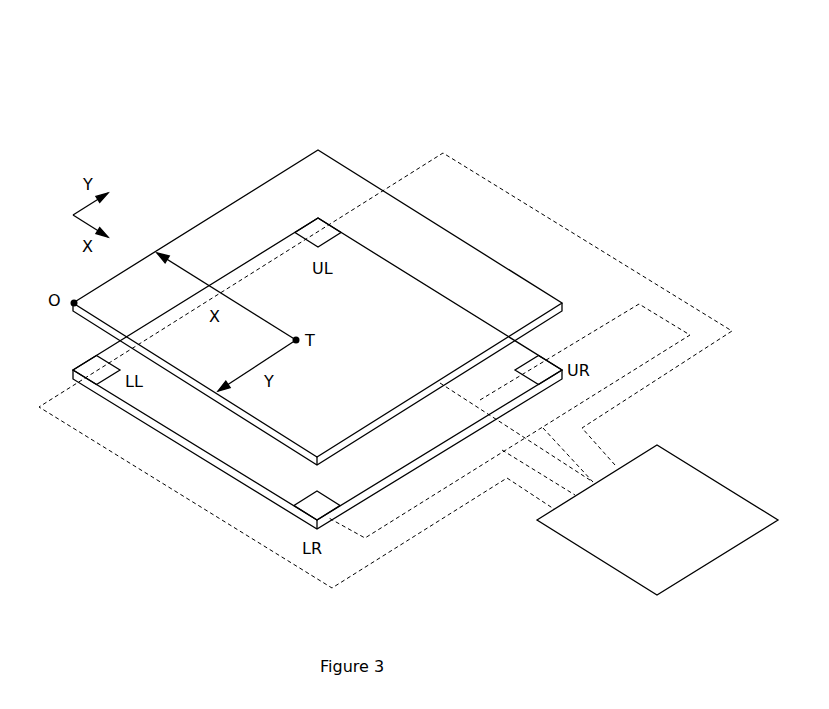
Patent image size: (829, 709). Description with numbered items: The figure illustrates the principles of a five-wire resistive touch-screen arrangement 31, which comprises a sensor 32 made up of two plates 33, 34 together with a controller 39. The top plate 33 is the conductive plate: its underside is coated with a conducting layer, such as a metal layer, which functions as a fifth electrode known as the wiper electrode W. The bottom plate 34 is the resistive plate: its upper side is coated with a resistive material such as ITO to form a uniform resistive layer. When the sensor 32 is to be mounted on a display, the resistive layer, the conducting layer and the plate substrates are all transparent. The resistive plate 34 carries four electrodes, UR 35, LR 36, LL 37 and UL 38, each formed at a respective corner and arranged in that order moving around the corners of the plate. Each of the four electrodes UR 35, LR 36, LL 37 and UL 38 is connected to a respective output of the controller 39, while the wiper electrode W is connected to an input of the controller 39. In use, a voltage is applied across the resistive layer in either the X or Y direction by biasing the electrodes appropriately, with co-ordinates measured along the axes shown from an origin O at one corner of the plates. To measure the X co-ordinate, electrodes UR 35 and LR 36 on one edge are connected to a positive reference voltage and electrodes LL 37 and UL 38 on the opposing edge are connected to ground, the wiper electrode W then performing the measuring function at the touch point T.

The 5-wire arrangement 31 is at (437, 117).
The sensor 32 is at (317, 286).
The top plate 33 is at (267, 182).
The bottom plate 34 is at (185, 451).
The UR electrode 35 is at (521, 377).
The LR electrode 36 is at (297, 504).
The LL electrode 37 is at (96, 356).
The UL electrode 38 is at (313, 221).
The controller 39 is at (575, 544).